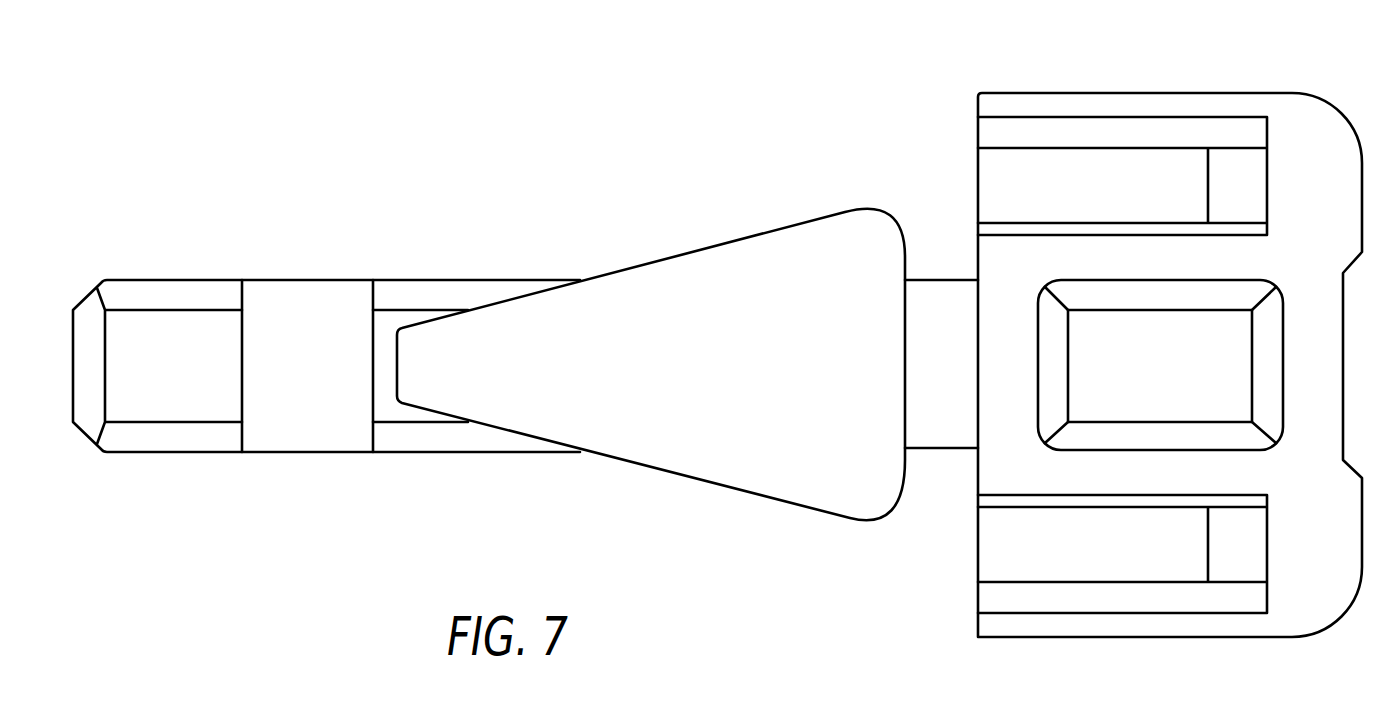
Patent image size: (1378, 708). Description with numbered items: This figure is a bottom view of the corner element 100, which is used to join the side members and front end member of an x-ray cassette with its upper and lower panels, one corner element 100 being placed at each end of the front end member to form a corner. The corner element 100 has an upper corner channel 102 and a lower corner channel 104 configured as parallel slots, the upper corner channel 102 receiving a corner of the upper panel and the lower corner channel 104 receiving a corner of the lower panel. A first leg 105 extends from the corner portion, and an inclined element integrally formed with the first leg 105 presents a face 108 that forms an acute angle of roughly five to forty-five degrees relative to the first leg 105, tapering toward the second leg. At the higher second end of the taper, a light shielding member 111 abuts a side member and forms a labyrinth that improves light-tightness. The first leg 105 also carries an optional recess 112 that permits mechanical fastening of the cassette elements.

The corner element 100 is at (545, 158).
The upper corner channel 102 is at (995, 555).
The lower corner channel 104 is at (992, 185).
The first leg 105 is at (183, 280).
The face 108 is at (743, 265).
The light shielding member 111 is at (907, 395).
The recess 112 is at (328, 432).